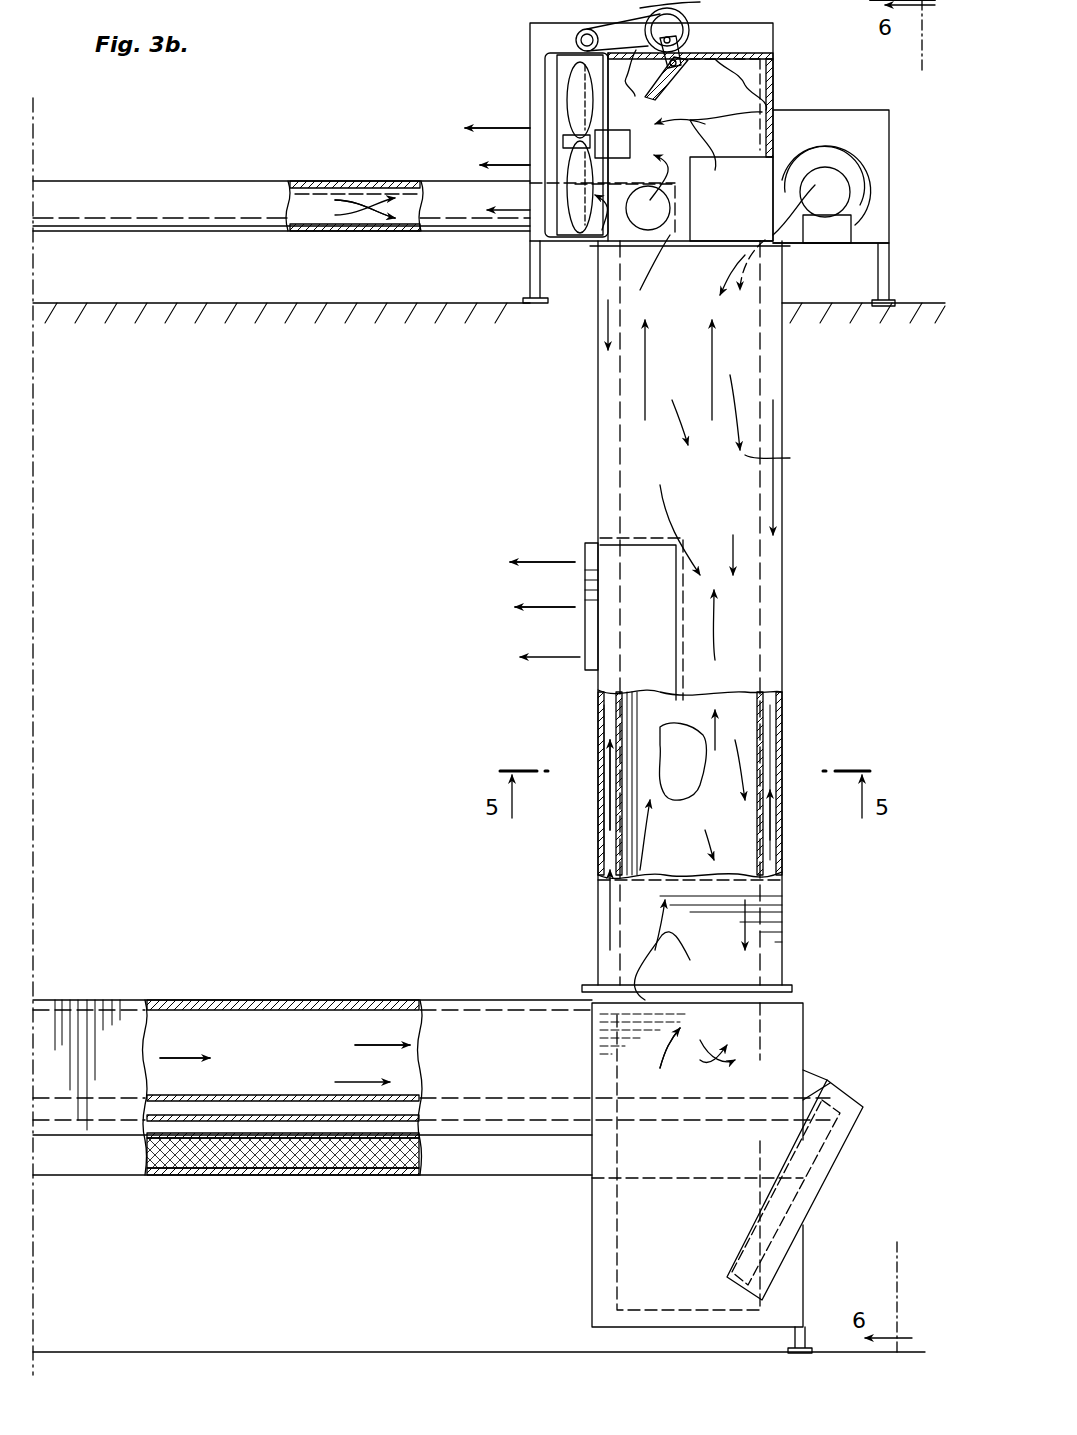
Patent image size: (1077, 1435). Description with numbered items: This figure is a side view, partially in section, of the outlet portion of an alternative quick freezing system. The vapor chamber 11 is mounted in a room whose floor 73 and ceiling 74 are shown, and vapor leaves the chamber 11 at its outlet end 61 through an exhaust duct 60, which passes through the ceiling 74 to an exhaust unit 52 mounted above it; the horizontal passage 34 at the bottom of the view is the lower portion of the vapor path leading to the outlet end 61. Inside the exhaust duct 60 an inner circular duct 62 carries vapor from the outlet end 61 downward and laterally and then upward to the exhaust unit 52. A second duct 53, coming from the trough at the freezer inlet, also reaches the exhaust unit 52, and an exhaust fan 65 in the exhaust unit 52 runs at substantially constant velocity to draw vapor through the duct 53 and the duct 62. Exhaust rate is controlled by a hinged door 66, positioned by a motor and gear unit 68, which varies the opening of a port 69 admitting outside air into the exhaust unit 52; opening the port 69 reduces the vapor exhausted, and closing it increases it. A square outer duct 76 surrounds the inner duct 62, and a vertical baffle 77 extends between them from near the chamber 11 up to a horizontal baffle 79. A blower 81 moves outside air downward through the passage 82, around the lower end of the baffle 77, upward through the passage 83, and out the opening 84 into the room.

The vapor chamber 11 is at (192, 1208).
The lower duct 34 is at (245, 1095).
The exhaust unit 52 is at (525, 48).
The duct 53 is at (108, 190).
The exhaust duct 60 is at (782, 616).
The outlet end 61 is at (815, 1013).
The inner circular duct 62 is at (765, 752).
The exhaust fan 65 is at (570, 88).
The hinged door 66 is at (676, 72).
The gear unit 68 is at (690, 15).
The port 69 is at (636, 55).
The floor 73 is at (360, 1352).
The ceiling 74 is at (268, 305).
The square outer duct 76 is at (790, 462).
The vertical baffle 77 is at (700, 720).
The horizontal baffle 79 is at (635, 535).
The blower 81 is at (838, 186).
The passage 82 is at (772, 830).
The passage 83 is at (608, 802).
The opening 84 is at (585, 640).